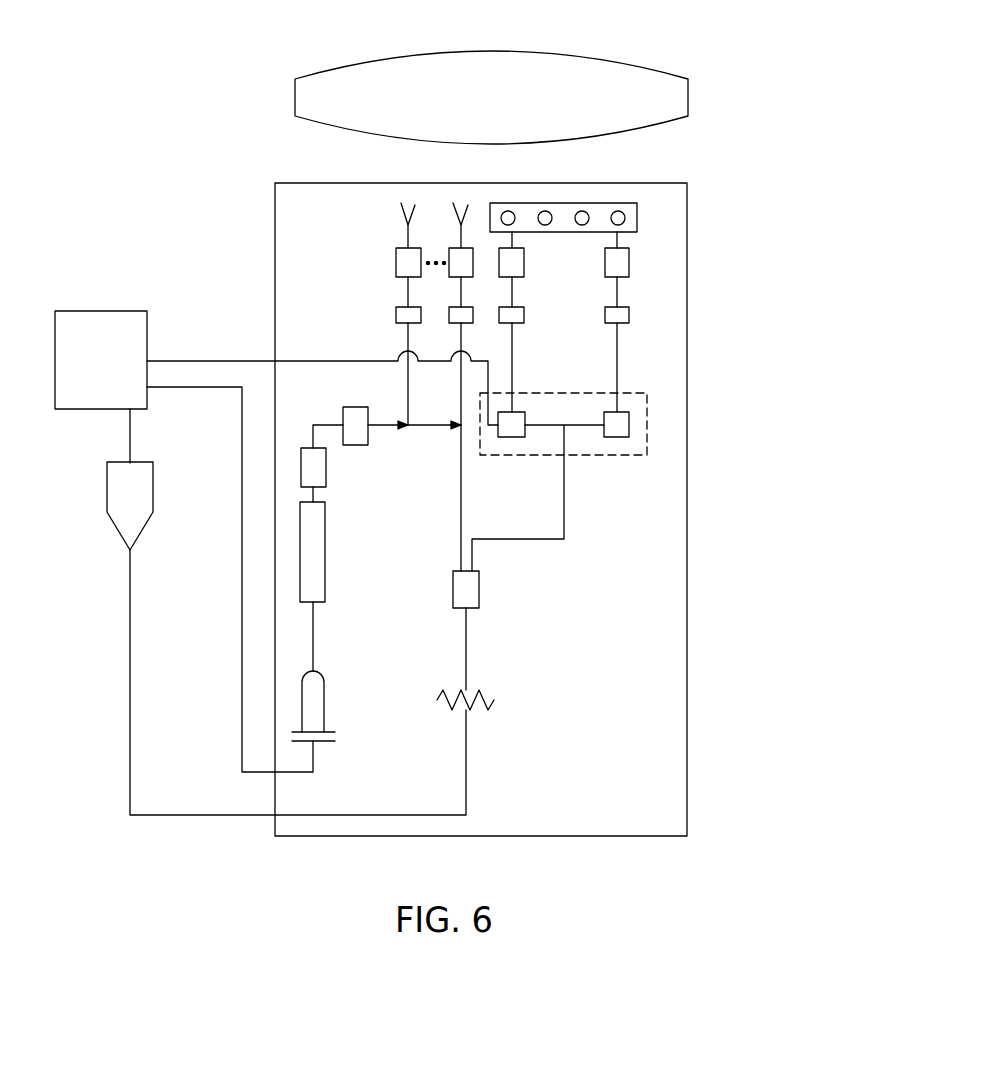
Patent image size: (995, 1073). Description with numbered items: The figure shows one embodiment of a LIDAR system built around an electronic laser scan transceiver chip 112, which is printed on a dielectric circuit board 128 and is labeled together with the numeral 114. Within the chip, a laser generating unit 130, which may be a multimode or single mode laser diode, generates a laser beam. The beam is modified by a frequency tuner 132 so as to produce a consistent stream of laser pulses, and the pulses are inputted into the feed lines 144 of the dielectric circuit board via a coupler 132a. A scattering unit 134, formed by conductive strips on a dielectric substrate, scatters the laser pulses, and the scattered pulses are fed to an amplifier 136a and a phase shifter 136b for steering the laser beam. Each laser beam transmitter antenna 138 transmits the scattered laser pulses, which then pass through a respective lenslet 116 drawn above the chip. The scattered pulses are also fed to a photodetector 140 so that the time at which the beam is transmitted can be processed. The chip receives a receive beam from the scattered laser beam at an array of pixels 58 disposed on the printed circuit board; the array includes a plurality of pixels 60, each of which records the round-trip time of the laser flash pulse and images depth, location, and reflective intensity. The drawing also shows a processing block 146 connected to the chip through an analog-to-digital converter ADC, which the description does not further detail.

The lenslet 116 is at (530, 51).
The laser beam transmitter antenna 138 is at (415, 205).
The array of pixels 58 is at (608, 202).
The pixel 60 is at (625, 218).
The amplifier 136a is at (650, 290).
The phase shifter 136b is at (395, 317).
The scattering unit 134 is at (345, 406).
The feed lines 144 is at (603, 457).
The coupler 132a is at (326, 470).
The frequency tuner 132 is at (325, 552).
The laser generating unit 130 is at (324, 700).
The photodetector 140 is at (494, 700).
The controller 146 is at (73, 409).
The analog to digital converter ADC is at (153, 488).
The circuit board 114 is at (522, 509).
The dielectric circuit board 128 is at (670, 510).
The electronic laser scan transceiver chip 112 is at (713, 585).